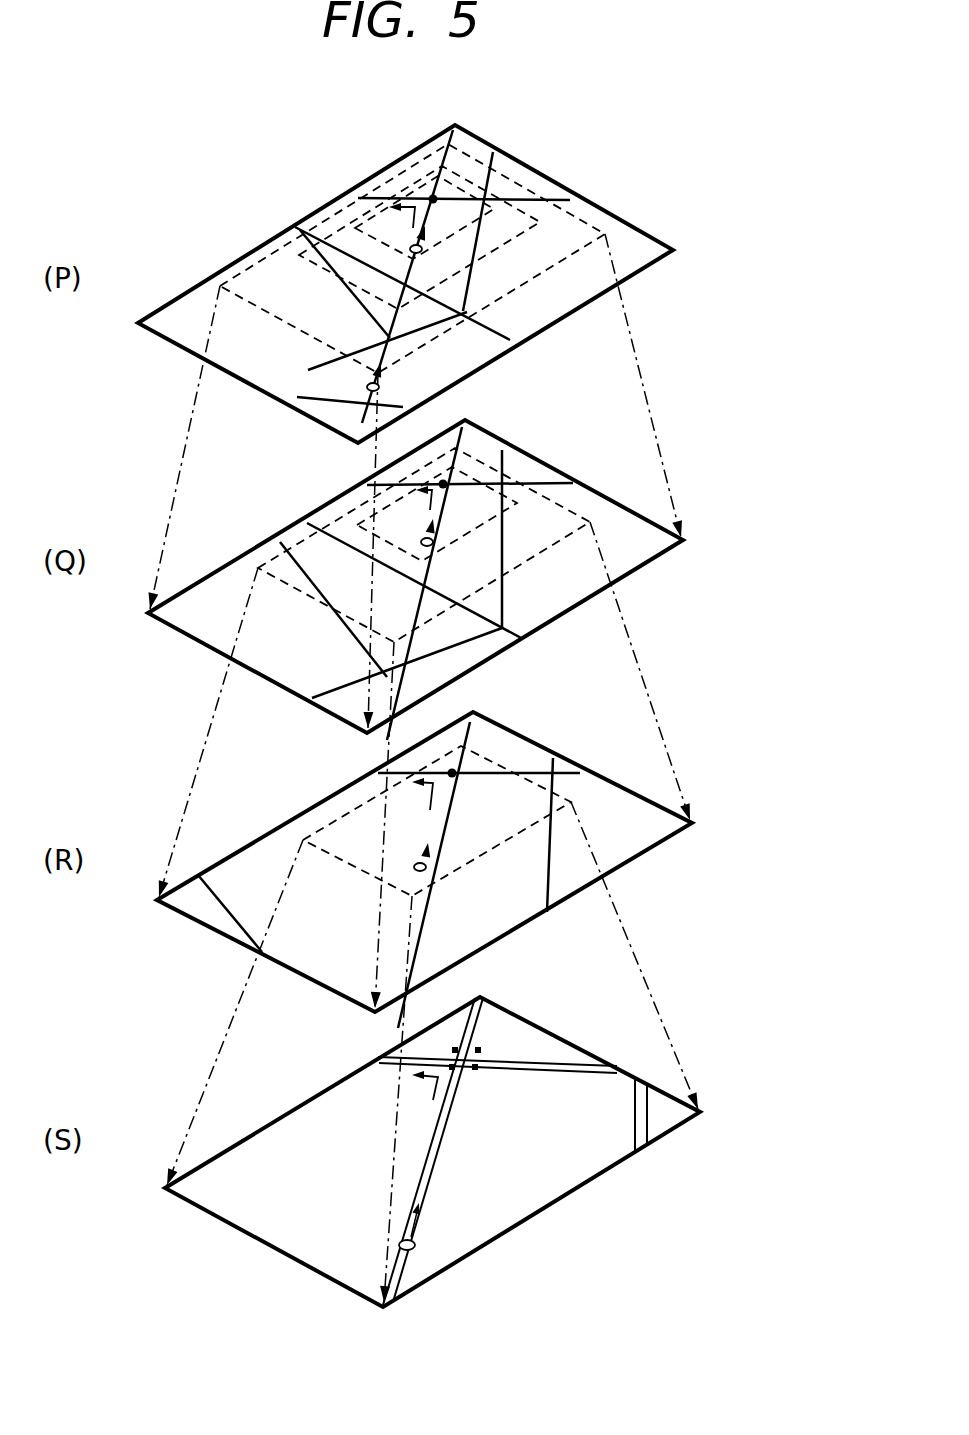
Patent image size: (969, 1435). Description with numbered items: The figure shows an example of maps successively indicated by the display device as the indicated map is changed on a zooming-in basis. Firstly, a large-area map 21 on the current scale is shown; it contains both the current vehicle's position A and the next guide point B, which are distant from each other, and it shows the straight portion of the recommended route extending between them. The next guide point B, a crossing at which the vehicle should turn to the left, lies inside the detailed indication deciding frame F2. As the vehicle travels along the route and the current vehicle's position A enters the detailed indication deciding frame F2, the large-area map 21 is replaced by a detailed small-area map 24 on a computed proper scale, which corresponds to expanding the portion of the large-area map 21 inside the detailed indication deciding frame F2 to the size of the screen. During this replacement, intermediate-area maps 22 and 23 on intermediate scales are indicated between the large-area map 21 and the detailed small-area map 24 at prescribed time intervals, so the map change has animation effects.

The large-area map 21 is at (615, 213).
The intermediate-area map 22 is at (612, 500).
The intermediate-area map 23 is at (613, 783).
The detailed small-area map 24 is at (640, 1081).
The current vehicle's position A is at (410, 249).
The next guide point B is at (436, 196).
The detailed indication deciding frame F2 is at (382, 217).